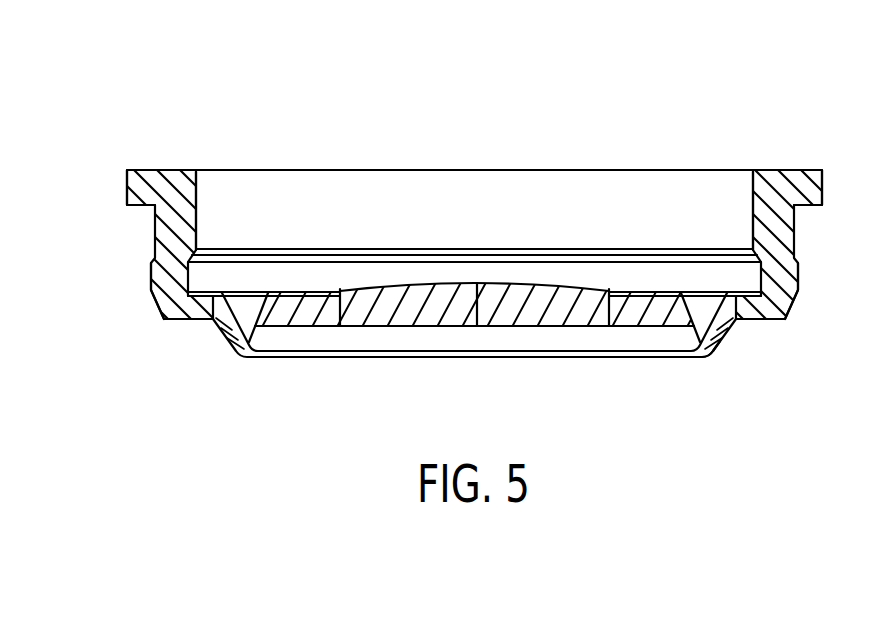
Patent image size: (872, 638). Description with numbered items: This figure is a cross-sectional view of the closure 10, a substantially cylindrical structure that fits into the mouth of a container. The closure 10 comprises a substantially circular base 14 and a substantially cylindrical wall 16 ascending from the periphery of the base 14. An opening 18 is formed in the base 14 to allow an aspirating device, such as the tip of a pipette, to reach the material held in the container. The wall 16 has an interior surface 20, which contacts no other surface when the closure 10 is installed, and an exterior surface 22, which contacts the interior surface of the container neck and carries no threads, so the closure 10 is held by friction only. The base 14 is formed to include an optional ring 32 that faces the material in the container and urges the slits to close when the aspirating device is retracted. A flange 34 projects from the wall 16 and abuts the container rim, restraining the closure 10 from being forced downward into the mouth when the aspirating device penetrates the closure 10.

The closure 10 is at (508, 70).
The base 14 is at (293, 327).
The wall 16 is at (163, 231).
The opening 18 is at (510, 327).
The interior surface 20 is at (198, 203).
The exterior surface 22 is at (151, 290).
The ring 32 is at (707, 360).
The flange 34 is at (172, 169).